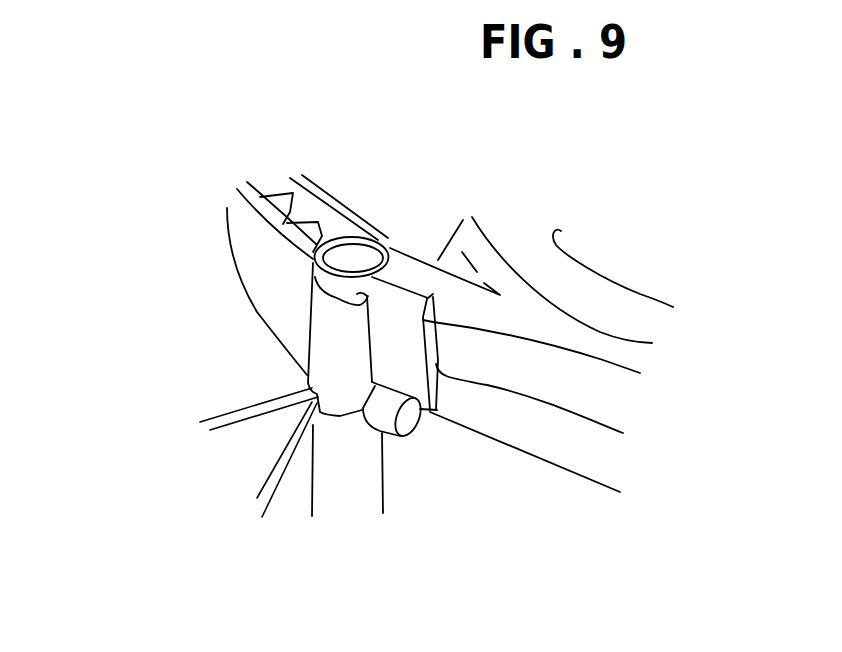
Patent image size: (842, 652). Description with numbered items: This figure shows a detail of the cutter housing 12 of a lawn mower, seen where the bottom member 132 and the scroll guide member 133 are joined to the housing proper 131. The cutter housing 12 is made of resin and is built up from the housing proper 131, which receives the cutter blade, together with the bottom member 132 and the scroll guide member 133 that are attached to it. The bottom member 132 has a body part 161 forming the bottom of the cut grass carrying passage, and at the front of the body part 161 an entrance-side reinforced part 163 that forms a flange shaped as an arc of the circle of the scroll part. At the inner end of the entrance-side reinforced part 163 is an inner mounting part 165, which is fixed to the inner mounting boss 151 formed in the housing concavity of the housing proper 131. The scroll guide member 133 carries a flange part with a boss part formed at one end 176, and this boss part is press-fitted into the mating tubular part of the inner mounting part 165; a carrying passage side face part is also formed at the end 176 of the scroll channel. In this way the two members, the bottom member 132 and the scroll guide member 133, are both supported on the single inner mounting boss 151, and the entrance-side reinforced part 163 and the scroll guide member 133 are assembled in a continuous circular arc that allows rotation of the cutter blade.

The cutter housing 12 is at (215, 160).
The bottom member 132 is at (214, 255).
The scroll guide member 133 is at (613, 248).
The entrance-side reinforced part 163 is at (310, 195).
The end 176 is at (383, 238).
The inner mounting part 165 is at (320, 352).
The body part 161 is at (271, 503).
The inner mounting boss 151 is at (383, 483).
The housing proper 131 is at (428, 542).